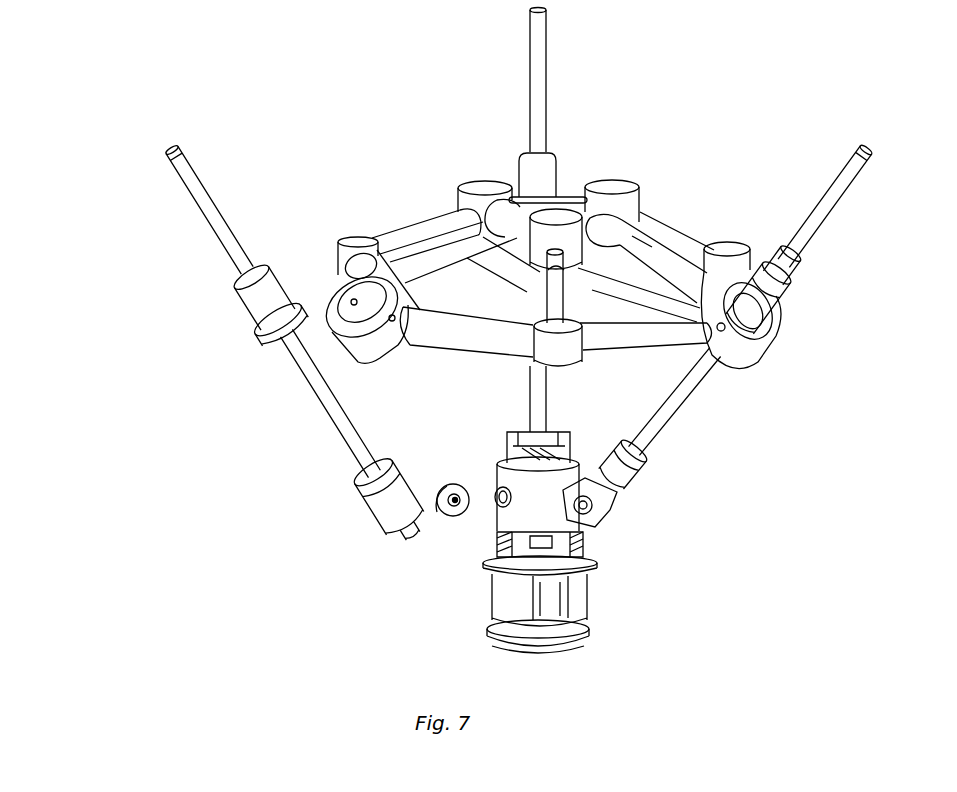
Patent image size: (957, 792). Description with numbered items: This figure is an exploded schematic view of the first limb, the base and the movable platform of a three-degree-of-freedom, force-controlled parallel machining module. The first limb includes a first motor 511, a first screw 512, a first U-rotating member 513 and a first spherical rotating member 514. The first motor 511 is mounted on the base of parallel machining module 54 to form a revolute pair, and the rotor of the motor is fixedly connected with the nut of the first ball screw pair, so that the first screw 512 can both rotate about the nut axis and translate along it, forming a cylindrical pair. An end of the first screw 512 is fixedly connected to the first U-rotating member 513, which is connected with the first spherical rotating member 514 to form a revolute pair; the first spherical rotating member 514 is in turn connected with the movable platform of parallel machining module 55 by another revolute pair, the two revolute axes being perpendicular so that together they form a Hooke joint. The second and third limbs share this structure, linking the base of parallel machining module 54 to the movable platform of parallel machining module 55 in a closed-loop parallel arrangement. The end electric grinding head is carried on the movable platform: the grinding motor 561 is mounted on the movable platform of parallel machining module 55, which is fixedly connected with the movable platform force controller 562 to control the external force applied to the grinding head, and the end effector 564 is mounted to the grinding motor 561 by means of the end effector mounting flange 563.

The base of parallel machining module 54 is at (620, 190).
The movable platform of parallel machining module 55 is at (547, 505).
The first motor 511 is at (257, 297).
The first screw 512 is at (303, 363).
The first U-rotating member 513 is at (400, 502).
The first spherical rotating member 514 is at (455, 501).
The grinding motor 561 is at (572, 466).
The movable platform force controller 562 is at (547, 557).
The end effector mounting flange 563 is at (583, 603).
The end effector 564 is at (577, 630).